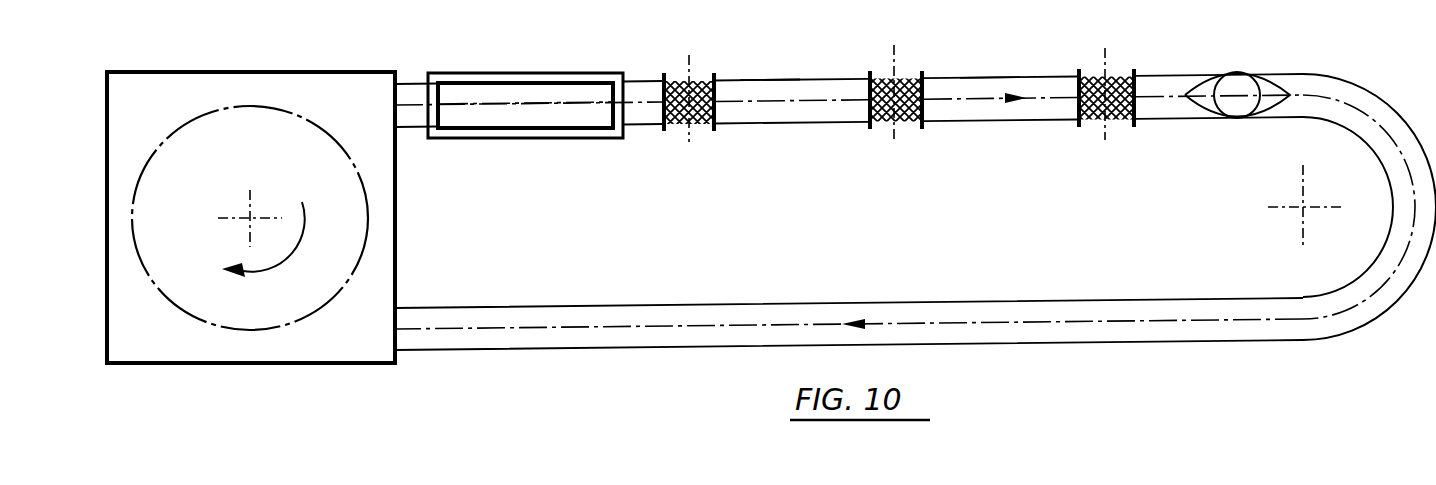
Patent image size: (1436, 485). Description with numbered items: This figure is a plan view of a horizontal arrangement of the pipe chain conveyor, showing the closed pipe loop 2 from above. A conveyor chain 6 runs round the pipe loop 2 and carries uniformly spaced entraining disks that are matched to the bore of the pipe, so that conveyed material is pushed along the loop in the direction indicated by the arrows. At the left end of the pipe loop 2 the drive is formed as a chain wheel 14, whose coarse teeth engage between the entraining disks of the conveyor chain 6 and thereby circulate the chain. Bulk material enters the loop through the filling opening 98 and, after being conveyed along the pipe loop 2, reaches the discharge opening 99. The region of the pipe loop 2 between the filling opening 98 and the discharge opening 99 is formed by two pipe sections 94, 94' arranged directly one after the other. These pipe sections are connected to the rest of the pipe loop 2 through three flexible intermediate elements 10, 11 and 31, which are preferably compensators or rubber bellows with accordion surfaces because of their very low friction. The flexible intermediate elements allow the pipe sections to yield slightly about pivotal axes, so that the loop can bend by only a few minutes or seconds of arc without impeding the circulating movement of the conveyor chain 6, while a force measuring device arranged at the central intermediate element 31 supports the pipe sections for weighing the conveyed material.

The pipe loop 2 is at (1036, 54).
The conveyor chain 6 is at (473, 103).
The flexible intermediate element 10 is at (676, 80).
The flexible intermediate element 11 is at (1118, 79).
The chain wheel 14 is at (318, 119).
The central flexible intermediate element 31 is at (877, 78).
The pipe section 94 is at (770, 59).
The pipe section 94' is at (986, 59).
The filling opening 98 is at (553, 90).
The discharge opening 99 is at (1247, 82).